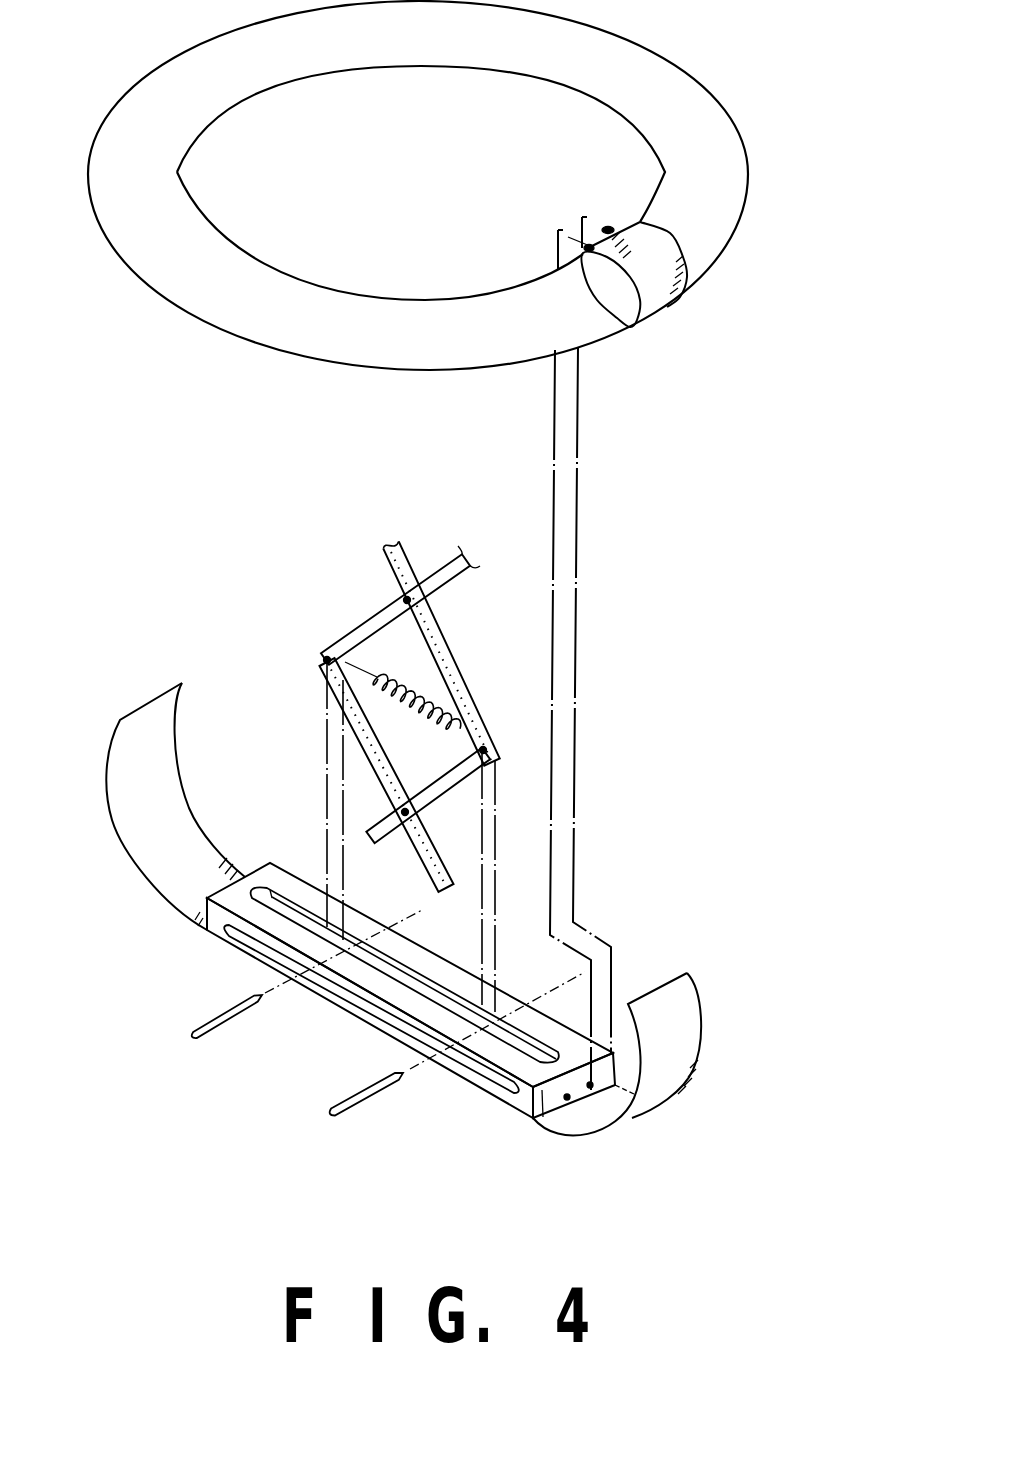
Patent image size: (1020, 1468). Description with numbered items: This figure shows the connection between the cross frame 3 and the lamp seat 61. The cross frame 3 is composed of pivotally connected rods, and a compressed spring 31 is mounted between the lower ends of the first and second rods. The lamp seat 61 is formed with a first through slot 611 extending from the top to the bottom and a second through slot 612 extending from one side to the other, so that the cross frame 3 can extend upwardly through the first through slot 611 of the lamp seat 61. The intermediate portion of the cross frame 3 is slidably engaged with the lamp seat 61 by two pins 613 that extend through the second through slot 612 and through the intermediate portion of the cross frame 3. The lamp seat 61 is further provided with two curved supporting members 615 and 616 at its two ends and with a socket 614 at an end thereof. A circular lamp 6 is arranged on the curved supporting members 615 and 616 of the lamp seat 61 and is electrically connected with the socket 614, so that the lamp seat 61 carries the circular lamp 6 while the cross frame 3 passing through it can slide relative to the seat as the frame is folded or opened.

The circular lamp 6 is at (718, 212).
The cross frame 3 is at (447, 652).
The compressed spring 31 is at (378, 677).
The lamp seat 61 is at (337, 1005).
The first through slot 611 is at (523, 1033).
The second through slot 612 is at (472, 1068).
The pins 613 is at (228, 1025).
The socket 614 is at (553, 1107).
The curved supporting member 615 is at (163, 803).
The curved supporting member 616 is at (682, 1007).